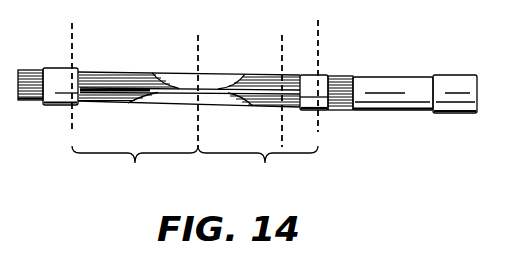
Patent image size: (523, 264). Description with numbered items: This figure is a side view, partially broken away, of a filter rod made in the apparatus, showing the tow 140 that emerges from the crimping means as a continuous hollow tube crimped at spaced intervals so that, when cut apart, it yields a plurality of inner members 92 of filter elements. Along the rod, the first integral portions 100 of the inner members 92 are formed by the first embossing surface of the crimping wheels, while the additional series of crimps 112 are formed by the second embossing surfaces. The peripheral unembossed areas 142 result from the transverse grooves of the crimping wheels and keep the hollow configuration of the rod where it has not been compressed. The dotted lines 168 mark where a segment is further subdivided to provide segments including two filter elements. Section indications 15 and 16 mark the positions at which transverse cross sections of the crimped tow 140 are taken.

The inner member 92 is at (195, 168).
The first integral portion 100 is at (177, 88).
The additional series of crimps 112 is at (108, 72).
The tow 140 is at (353, 121).
The peripheral unembossed area 142 is at (54, 77).
The dotted lines 168 is at (73, 29).
The section line 15- 15 is at (208, 49).
The section line 16- 16 is at (263, 50).